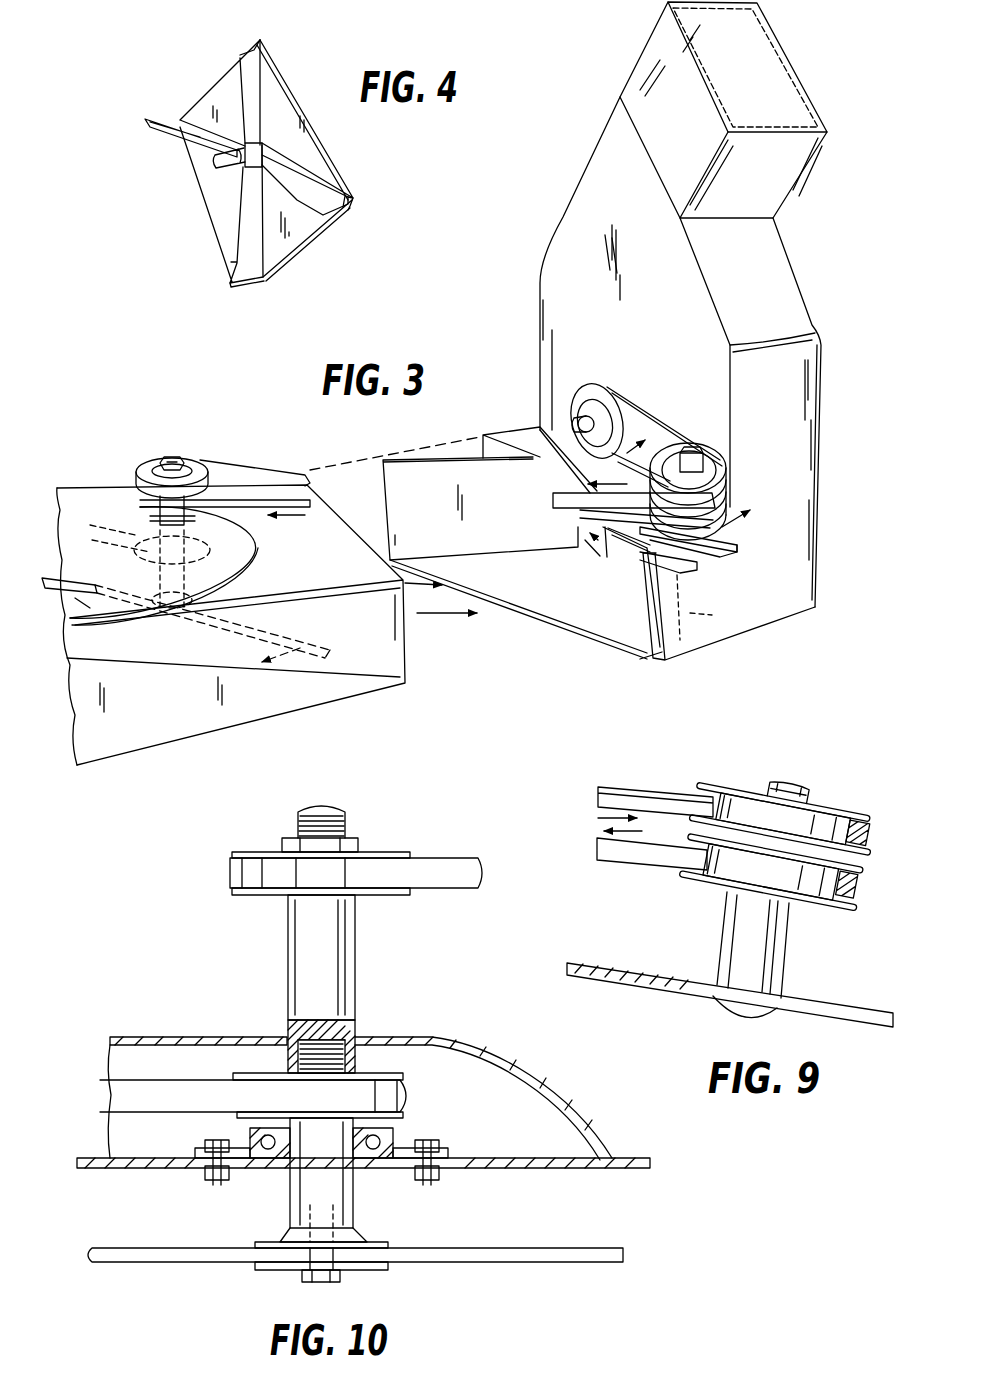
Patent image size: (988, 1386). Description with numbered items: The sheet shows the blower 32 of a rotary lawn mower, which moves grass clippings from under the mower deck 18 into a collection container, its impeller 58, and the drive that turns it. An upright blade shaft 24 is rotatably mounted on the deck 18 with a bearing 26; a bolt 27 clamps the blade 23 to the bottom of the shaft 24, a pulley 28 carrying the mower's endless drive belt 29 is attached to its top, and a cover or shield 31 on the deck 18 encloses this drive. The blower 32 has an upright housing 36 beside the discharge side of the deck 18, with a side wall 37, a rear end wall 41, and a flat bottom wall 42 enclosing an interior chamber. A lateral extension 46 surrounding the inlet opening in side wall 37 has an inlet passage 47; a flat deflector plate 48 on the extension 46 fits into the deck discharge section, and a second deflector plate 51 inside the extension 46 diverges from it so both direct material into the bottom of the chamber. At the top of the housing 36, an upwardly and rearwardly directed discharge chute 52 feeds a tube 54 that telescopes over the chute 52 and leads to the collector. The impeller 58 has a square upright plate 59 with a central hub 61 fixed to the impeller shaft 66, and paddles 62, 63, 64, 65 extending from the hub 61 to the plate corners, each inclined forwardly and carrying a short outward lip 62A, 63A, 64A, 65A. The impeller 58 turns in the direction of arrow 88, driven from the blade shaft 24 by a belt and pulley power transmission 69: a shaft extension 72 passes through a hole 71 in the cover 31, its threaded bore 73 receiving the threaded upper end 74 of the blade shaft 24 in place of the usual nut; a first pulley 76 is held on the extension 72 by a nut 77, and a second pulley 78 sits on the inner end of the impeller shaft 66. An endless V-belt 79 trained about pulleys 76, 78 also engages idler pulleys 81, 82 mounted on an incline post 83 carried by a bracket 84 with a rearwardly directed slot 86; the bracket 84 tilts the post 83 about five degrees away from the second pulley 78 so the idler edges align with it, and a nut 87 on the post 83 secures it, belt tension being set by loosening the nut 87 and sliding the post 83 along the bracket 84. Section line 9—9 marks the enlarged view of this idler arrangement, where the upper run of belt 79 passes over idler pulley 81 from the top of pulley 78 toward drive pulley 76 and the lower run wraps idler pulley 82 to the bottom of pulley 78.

In FIG. 3, the section line 9— 9 is at (697, 475).
In FIG. 3, the deck 18 is at (100, 490).
In FIG. 10, the deck 18 is at (105, 1170).
In FIG. 3, the blade 23 is at (50, 580).
In FIG. 10, the blade 23 is at (355, 1256).
In FIG. 10, the upright blade shaft 24 is at (298, 1180).
In FIG. 10, the bearing 26 is at (395, 1133).
In FIG. 10, the bolt 27 is at (330, 1280).
In FIG. 3, the pulley 28 is at (252, 565).
In FIG. 10, the pulley 28 is at (400, 1075).
In FIG. 3, the endless drive belt 29 is at (85, 524).
In FIG. 10, the endless drive belt 29 is at (118, 1100).
In FIG. 3, the cover or shield 31 is at (72, 614).
In FIG. 10, the cover or shield 31 is at (165, 1035).
In FIG. 3, the blower 32 is at (505, 315).
In FIG. 3, the upright housing 36 is at (822, 455).
In FIG. 3, the side wall 37 is at (610, 245).
In FIG. 3, the rear end wall 41 is at (793, 377).
In FIG. 3, the bottom wall 42 is at (572, 600).
In FIG. 3, the extension 46 is at (531, 440).
In FIG. 3, the inlet passage 47 is at (625, 580).
In FIG. 3, the deflector plate 48 is at (425, 478).
In FIG. 3, the second deflector plate 51 is at (695, 616).
In FIG. 3, the discharge chute 52 is at (633, 148).
In FIG. 3, the tube 54 is at (655, 75).
In FIG. 3, the impeller 58 is at (603, 558).
In FIG. 4, the square upright plate 59 is at (312, 161).
In FIG. 4, the hub 61 is at (267, 148).
In FIG. 4, the paddle 62 is at (243, 242).
In FIG. 4, the lip 62A is at (240, 285).
In FIG. 4, the paddle 63 is at (177, 127).
In FIG. 4, the lip 63A is at (147, 119).
In FIG. 4, the paddle 64 is at (248, 84).
In FIG. 4, the lip 64A is at (246, 57).
In FIG. 4, the paddle 65 is at (318, 193).
In FIG. 4, the lip 65A is at (348, 210).
In FIG. 4, the impeller shaft 66 is at (212, 164).
In FIG. 3, the impeller shaft 66 is at (576, 425).
In FIG. 3, the belt and pulley power transmission 69 is at (652, 388).
In FIG. 3, the hole 71 is at (155, 517).
In FIG. 10, the hole 71 is at (287, 1040).
In FIG. 3, the shaft extension 72 is at (190, 515).
In FIG. 10, the shaft extension 72 is at (350, 968).
In FIG. 10, the threaded bore 73 is at (356, 1042).
In FIG. 10, the threaded upper end 74 is at (296, 1065).
In FIG. 3, the first pulley 76 is at (148, 463).
In FIG. 10, the first pulley 76 is at (243, 852).
In FIG. 3, the nut 77 is at (183, 460).
In FIG. 10, the nut 77 is at (346, 834).
In FIG. 3, the second pulley 78 is at (586, 392).
In FIG. 3, the endless belt 79 is at (565, 493).
In FIG. 9, the endless belt 79 is at (634, 797).
In FIG. 10, the endless belt 79 is at (455, 866).
In FIG. 3, the idler pulley 81 is at (728, 462).
In FIG. 9, the idler pulley 81 is at (822, 810).
In FIG. 3, the idler pulley 82 is at (738, 546).
In FIG. 9, the idler pulley 82 is at (812, 878).
In FIG. 9, the incline post 83 is at (785, 942).
In FIG. 3, the bracket 84 is at (735, 555).
In FIG. 9, the bracket 84 is at (855, 1002).
In FIG. 3, the slot 86 is at (700, 560).
In FIG. 3, the nut 87 is at (703, 455).
In FIG. 9, the nut 87 is at (762, 786).
In FIG. 3, the arrow 88 is at (625, 555).